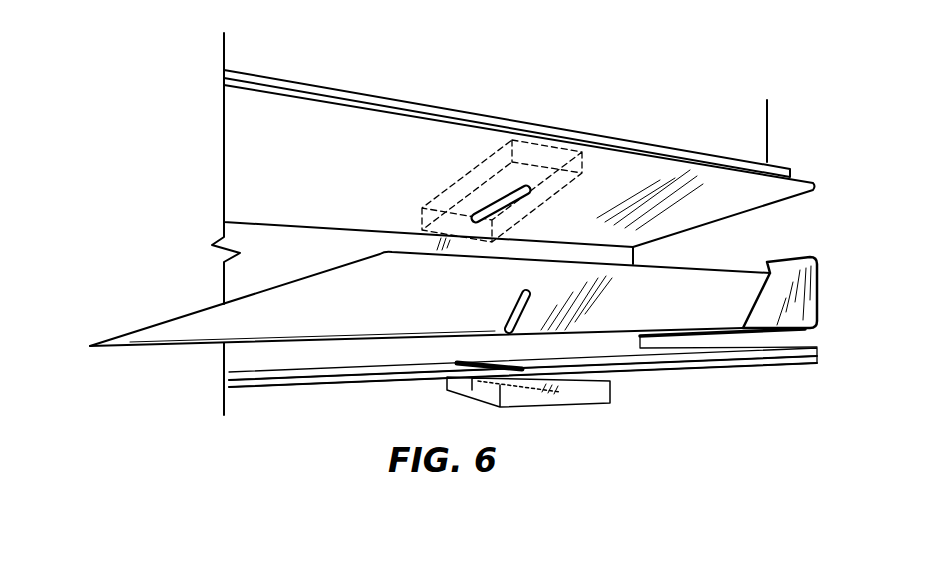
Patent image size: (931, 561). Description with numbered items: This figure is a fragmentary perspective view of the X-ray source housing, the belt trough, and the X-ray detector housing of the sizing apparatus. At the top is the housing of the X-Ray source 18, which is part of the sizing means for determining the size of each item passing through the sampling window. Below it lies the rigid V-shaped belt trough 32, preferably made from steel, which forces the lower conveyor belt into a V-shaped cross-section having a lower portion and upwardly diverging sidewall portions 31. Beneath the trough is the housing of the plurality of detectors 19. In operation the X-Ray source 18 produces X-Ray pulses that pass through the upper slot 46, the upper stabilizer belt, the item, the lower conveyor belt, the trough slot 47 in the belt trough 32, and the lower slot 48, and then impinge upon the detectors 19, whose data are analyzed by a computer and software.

The X-Ray source 18 is at (472, 168).
The upper slot 46 is at (483, 212).
The trough slot 47 is at (512, 303).
The upwardly diverging sidewall portions 31 is at (720, 266).
The V-shaped belt trough 32 is at (185, 316).
The lower slot 48 is at (453, 366).
The detectors 19 is at (548, 395).